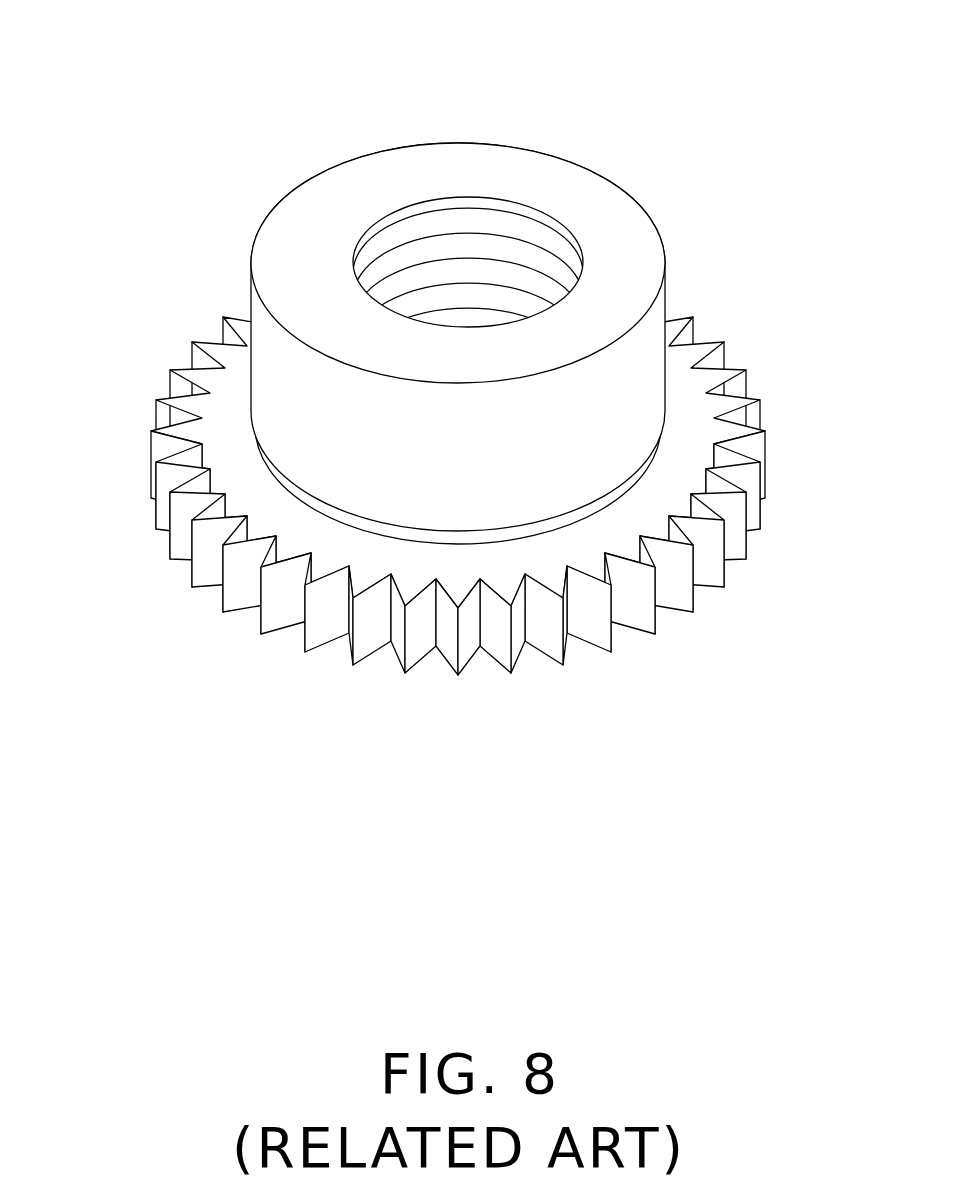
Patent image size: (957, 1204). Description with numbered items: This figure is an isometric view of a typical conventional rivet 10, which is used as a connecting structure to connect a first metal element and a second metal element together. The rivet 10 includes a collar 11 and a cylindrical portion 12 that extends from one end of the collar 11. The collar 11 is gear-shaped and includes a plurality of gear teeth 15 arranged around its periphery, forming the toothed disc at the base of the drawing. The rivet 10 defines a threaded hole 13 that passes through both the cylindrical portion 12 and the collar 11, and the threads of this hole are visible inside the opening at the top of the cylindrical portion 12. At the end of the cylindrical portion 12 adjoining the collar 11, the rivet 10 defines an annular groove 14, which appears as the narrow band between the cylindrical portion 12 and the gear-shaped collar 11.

The rivet 10 is at (457, 368).
The collar 11 is at (457, 464).
The cylindrical portion 12 is at (532, 299).
The threaded hole 13 is at (437, 252).
The annular groove 14 is at (582, 512).
The gear teeth 15 is at (178, 390).